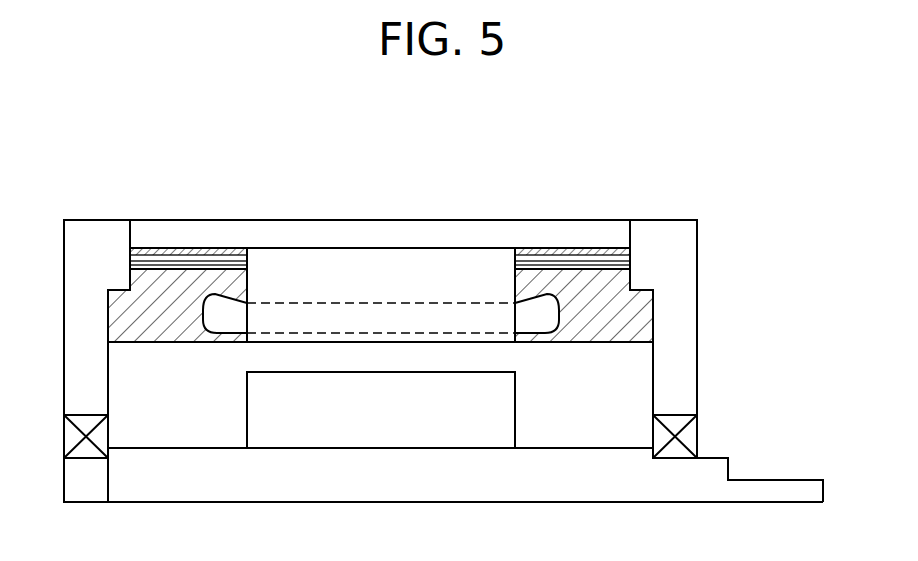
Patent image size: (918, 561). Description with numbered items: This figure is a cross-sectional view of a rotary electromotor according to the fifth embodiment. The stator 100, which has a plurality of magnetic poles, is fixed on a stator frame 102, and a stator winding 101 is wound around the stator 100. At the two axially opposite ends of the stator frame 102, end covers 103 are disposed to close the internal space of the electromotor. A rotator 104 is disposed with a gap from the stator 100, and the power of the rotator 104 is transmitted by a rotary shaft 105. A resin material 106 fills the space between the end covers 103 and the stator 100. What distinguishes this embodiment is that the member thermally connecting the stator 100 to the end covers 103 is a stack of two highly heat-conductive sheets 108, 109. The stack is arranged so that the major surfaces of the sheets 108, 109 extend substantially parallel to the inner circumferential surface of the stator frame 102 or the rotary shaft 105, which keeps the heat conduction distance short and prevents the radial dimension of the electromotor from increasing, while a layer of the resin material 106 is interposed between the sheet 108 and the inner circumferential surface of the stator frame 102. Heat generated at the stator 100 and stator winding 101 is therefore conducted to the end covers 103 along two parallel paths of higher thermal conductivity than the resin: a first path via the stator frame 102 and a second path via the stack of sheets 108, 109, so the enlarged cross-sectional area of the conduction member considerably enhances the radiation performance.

The stator 100 is at (381, 295).
The stator winding 101 is at (500, 322).
The stator frame 102 is at (307, 240).
The end covers 103 is at (92, 235).
The rotator 104 is at (381, 410).
The rotary shaft 105 is at (443, 475).
The resin material 106 is at (642, 323).
The highly heat-conductive sheet 108 is at (540, 260).
The highly heat-conductive sheet 109 is at (587, 267).